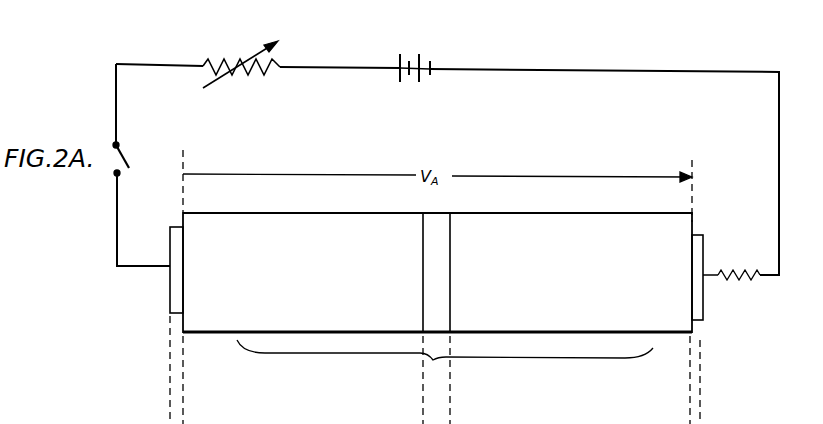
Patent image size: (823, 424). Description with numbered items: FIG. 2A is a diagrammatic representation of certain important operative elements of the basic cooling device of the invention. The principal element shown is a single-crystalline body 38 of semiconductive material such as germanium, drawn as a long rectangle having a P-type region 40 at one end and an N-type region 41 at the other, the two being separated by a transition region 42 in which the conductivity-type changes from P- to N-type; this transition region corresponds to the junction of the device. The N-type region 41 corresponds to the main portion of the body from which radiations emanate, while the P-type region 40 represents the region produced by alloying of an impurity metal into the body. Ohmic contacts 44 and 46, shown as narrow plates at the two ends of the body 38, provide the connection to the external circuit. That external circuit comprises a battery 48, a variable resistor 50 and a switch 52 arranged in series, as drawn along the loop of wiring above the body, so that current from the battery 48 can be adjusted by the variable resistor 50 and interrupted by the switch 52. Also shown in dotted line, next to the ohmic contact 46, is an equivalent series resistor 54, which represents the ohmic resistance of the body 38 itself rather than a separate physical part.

The single-crystalline body 38 is at (437, 302).
The P-type region 40 is at (282, 212).
The N-type region 41 is at (585, 221).
The transition region 42 is at (446, 214).
The ohmic contact 44 is at (170, 250).
The ohmic contact 46 is at (702, 248).
The battery 48 is at (427, 113).
The variable resistor 50 is at (266, 31).
The switch 52 is at (156, 160).
The equivalent series resistor 54 is at (740, 284).